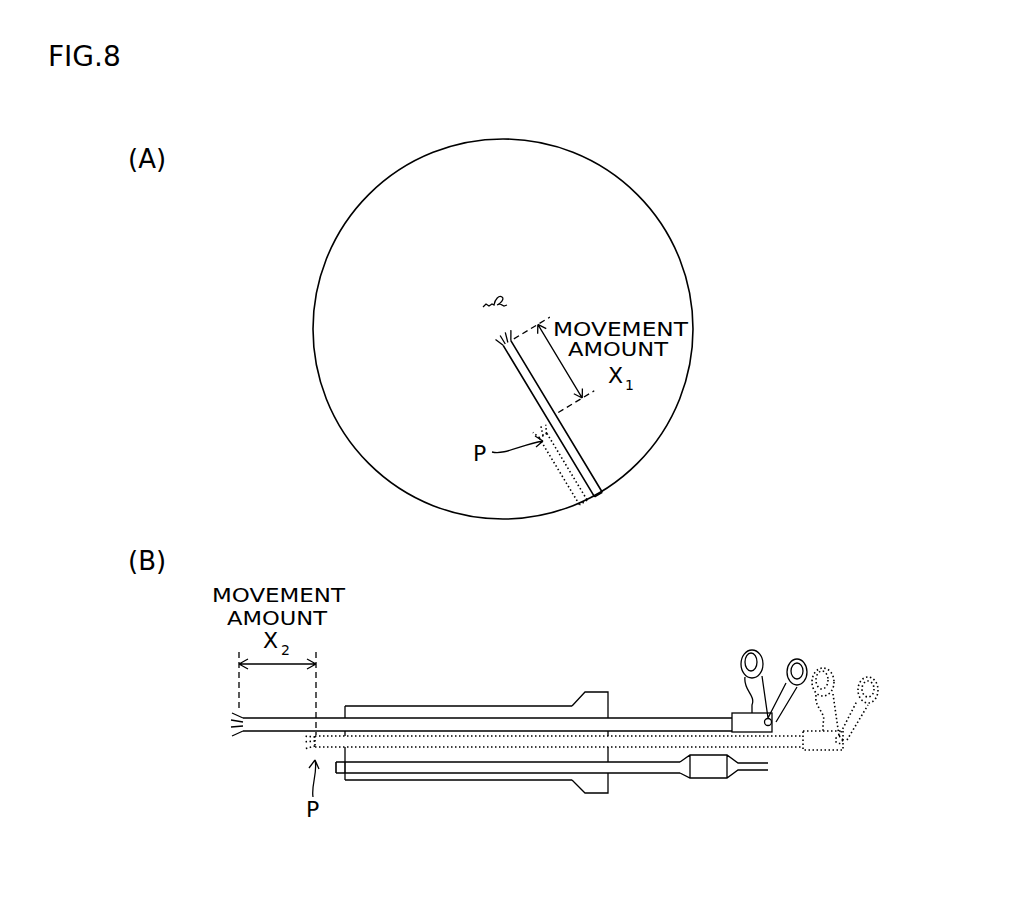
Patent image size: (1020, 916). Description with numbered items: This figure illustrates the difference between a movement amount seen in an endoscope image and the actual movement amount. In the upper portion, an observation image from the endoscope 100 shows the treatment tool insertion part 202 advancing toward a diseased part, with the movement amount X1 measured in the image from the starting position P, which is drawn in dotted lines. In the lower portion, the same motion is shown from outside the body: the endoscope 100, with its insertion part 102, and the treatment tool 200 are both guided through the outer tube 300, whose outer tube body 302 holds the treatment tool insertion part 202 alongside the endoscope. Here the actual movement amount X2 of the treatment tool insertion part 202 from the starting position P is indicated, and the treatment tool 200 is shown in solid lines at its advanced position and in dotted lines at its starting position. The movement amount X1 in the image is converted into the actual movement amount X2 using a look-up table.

The treatment tool insertion part 202 is at (573, 448).
The outer tube body 302 is at (457, 706).
The outer tube 300 is at (588, 685).
The endoscope insertion portion 102 is at (628, 767).
The endoscope 100 is at (716, 790).
The treatment tool 200 is at (781, 640).